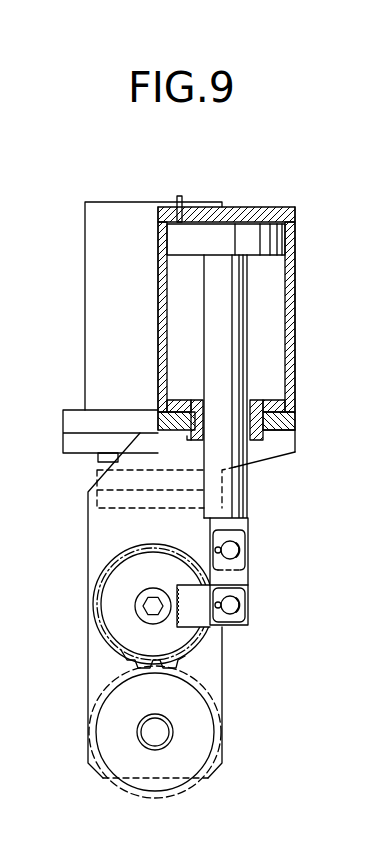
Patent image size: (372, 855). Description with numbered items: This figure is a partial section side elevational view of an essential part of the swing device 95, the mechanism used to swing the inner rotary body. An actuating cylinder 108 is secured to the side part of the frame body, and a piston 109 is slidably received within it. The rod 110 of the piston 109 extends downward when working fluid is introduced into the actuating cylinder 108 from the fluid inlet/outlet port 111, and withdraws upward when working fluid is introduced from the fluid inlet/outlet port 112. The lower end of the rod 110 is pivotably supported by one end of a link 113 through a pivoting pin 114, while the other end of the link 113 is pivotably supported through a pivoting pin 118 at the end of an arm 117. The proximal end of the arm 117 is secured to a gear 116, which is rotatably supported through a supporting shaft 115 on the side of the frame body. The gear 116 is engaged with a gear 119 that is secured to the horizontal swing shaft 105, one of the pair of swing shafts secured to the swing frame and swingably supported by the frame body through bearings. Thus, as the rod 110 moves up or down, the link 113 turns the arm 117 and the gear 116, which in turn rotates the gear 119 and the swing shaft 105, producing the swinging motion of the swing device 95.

The swing device 95 is at (279, 203).
The horizontal swing shaft 105 is at (138, 730).
The actuating cylinder 108 is at (292, 303).
The piston 109 is at (277, 239).
The rod 110 is at (247, 362).
The fluid inlet/outlet port 111 is at (179, 212).
The fluid inlet/outlet port 112 is at (193, 436).
The link 113 is at (248, 575).
The pivoting pin 114 is at (222, 547).
The supporting shaft 115 is at (136, 606).
The gear 116 is at (98, 642).
The arm 117 is at (189, 585).
The pivoting pin 118 is at (232, 614).
The gear 119 is at (212, 732).